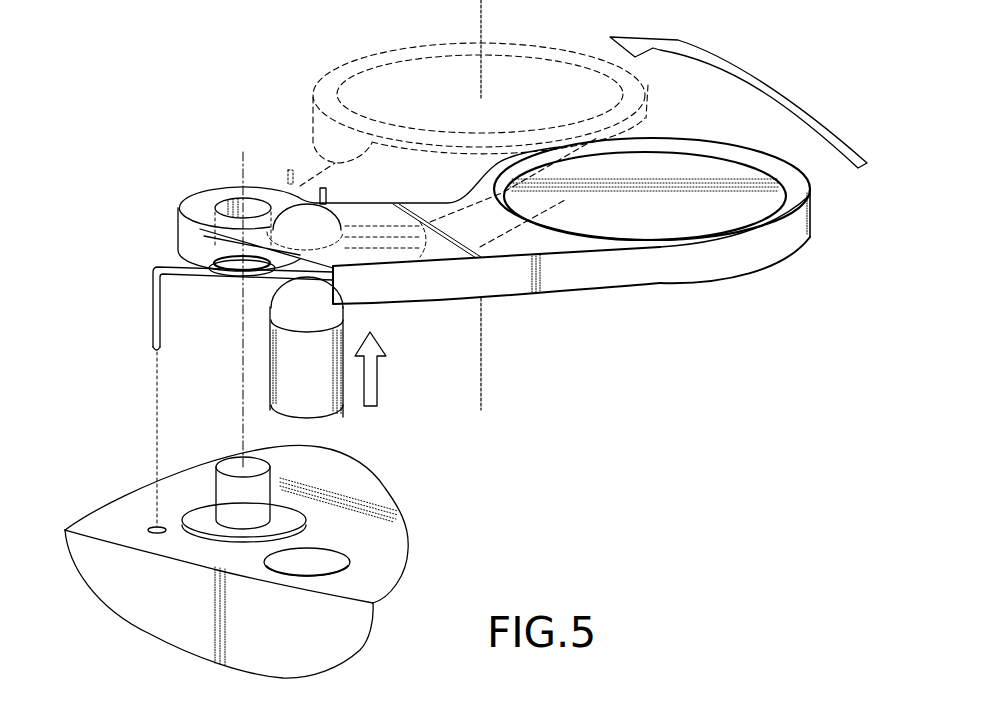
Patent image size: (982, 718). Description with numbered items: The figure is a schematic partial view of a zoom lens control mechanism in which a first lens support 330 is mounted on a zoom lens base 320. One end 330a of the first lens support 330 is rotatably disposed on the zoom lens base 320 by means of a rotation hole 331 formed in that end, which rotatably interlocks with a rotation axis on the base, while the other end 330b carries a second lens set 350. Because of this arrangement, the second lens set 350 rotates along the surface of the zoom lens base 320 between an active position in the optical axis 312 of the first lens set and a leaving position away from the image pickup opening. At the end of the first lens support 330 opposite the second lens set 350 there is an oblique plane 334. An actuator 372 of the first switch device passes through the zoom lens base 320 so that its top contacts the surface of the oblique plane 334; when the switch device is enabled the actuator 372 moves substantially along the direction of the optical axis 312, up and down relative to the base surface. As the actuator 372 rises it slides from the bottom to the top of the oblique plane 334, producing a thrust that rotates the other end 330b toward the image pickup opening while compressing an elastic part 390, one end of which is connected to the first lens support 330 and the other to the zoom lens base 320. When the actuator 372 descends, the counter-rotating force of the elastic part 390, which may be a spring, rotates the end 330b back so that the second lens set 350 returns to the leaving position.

The optical axis 312 is at (481, 24).
The end of the first lens support 330a is at (190, 212).
The rotation hole 331 is at (237, 210).
The oblique plane 334 is at (178, 238).
The elastic part 390 is at (238, 278).
The first lens support 330 is at (555, 271).
The second lens set 350 is at (679, 177).
The other end of the first lens support 330b is at (805, 189).
The actuator 372 is at (330, 400).
The zoom lens base 320 is at (372, 528).